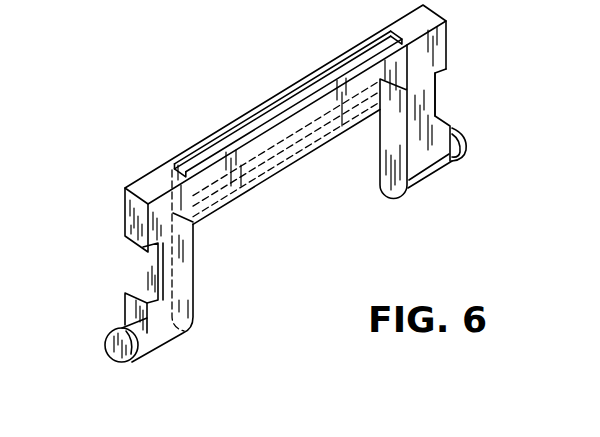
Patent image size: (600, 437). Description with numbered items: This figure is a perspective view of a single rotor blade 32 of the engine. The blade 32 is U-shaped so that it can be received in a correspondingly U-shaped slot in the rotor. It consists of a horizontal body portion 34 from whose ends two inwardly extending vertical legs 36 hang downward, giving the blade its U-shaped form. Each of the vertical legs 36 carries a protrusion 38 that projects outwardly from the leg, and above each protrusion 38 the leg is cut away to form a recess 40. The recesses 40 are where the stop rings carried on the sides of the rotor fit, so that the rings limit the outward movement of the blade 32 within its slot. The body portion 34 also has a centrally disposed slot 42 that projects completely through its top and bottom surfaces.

The blade 32 is at (142, 160).
The body portion 34 is at (310, 73).
The vertical legs 36 is at (178, 267).
The protrusion 38 is at (115, 355).
The recess 40 is at (148, 266).
The slot 42 is at (252, 122).